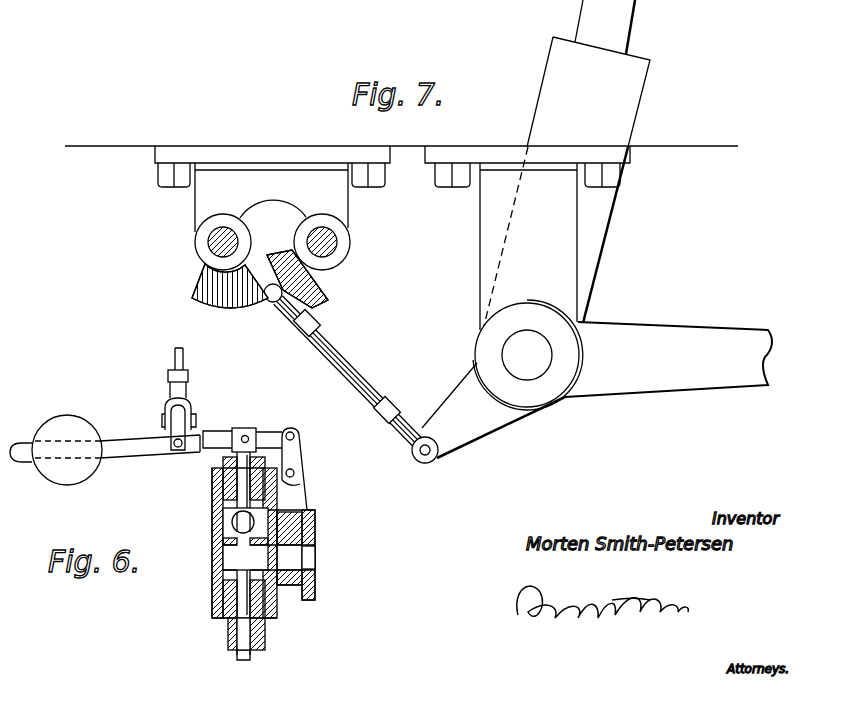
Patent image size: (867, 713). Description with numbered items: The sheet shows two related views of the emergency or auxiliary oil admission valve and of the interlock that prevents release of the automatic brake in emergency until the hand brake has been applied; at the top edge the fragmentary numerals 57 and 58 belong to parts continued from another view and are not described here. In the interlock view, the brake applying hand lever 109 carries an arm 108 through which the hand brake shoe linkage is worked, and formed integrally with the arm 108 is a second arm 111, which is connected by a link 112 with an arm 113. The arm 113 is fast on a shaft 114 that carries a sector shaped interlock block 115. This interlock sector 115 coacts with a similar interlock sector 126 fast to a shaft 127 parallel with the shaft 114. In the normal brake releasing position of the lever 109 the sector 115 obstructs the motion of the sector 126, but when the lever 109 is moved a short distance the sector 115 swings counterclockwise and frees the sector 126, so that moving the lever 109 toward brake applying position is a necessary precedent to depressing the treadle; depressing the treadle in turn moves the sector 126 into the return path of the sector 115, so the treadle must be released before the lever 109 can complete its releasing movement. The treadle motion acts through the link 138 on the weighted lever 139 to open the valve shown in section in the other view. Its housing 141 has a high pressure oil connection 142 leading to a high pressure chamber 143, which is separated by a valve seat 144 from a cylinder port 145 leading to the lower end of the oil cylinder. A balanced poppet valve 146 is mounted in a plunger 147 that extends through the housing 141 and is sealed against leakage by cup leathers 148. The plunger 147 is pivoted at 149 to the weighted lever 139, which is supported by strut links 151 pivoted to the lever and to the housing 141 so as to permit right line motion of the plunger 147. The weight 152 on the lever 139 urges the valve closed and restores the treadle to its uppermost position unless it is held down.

In FIG. 7, the part (upper figure) 57 is at (513, 6).
In FIG. 7, the part (upper figure) 58 is at (347, 6).
In FIG. 7, the arm 108 is at (648, 363).
In FIG. 7, the brake applying hand lever 109 is at (610, 30).
In FIG. 7, the second arm 111 is at (461, 386).
In FIG. 7, the link 112 is at (376, 349).
In FIG. 7, the arm 113 is at (292, 246).
In FIG. 7, the shaft 114 is at (390, 251).
In FIG. 7, the sector shaped interlock block 115 is at (368, 301).
In FIG. 7, the interlock sector 126 is at (206, 283).
In FIG. 7, the shaft 127 is at (201, 242).
In FIG. 6, the link 138 is at (185, 352).
In FIG. 6, the weighted lever 139 is at (140, 426).
In FIG. 6, the housing 141 is at (219, 565).
In FIG. 6, the high pressure oil connection 142 is at (262, 522).
In FIG. 6, the high pressure chamber 143 is at (228, 517).
In FIG. 6, the valve seat 144 is at (228, 548).
In FIG. 6, the cylinder port 145 is at (304, 556).
In FIG. 6, the balanced poppet valve 146 is at (232, 527).
In FIG. 6, the plunger 147 is at (241, 492).
In FIG. 6, the cup leathers 148 is at (224, 479).
In FIG. 6, the pivot 149 is at (247, 436).
In FIG. 6, the strut links 151 is at (342, 457).
In FIG. 6, the weight 152 is at (72, 470).